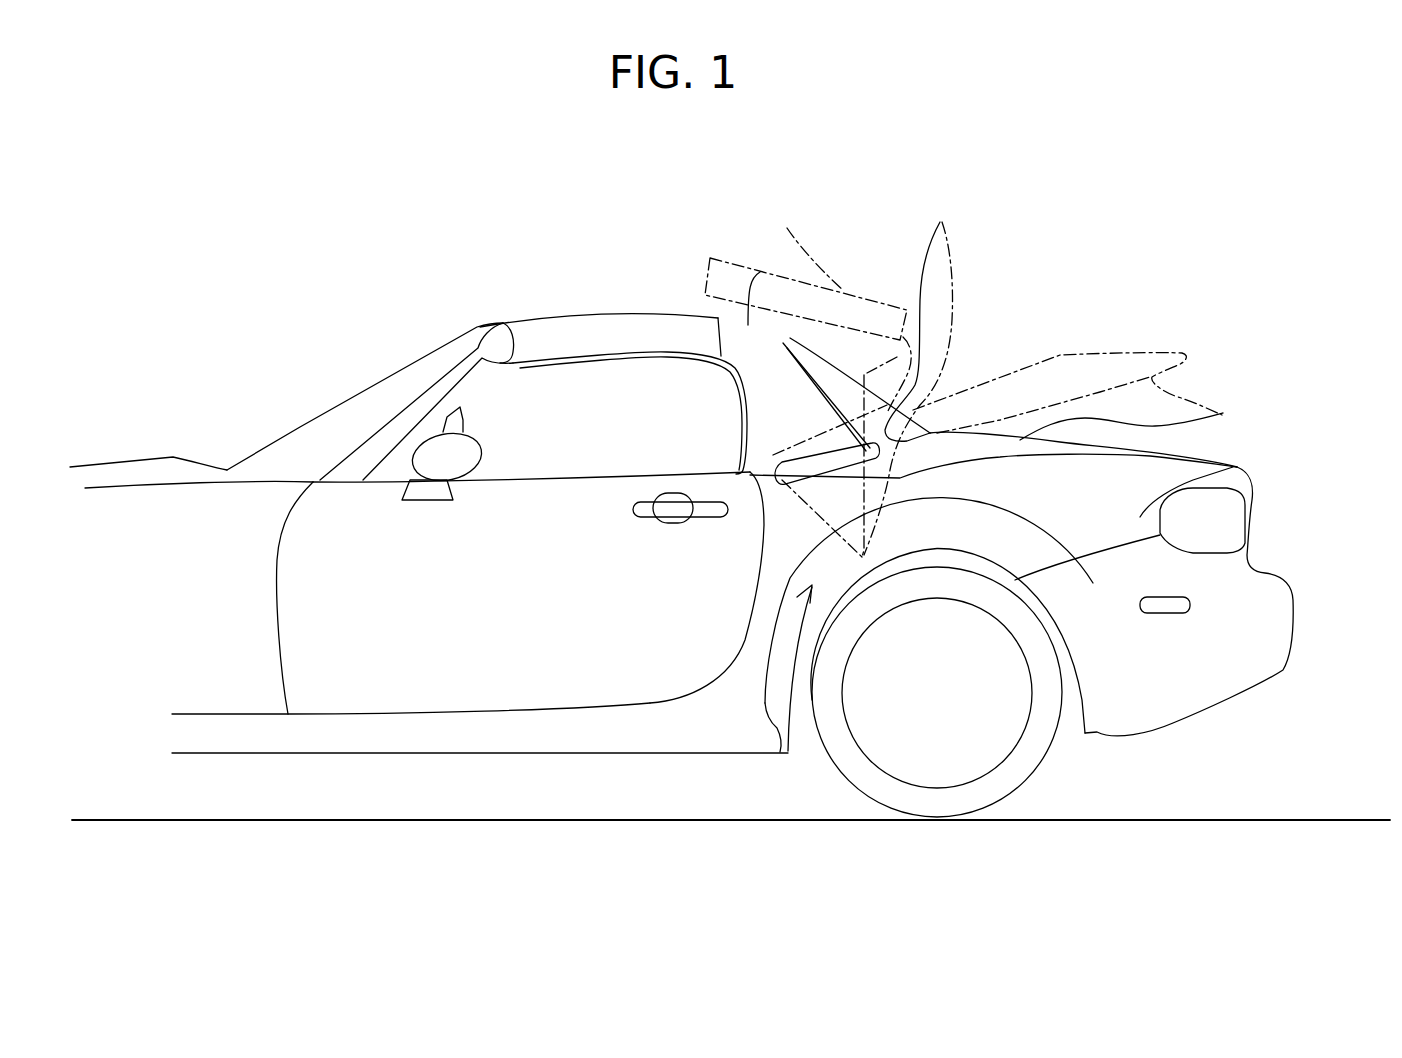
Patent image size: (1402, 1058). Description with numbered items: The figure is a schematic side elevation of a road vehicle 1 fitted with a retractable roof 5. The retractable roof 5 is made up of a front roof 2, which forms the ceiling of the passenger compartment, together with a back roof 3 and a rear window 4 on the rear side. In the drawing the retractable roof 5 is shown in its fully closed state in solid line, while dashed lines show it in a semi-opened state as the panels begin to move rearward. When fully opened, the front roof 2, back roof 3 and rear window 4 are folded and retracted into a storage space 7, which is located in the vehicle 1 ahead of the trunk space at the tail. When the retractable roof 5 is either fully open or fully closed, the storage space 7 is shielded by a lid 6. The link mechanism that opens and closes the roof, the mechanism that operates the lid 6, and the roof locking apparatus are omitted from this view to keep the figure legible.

The vehicle 1 is at (327, 293).
The front roof 2 is at (648, 313).
The back roof 3 is at (760, 272).
The rear window 4 is at (908, 369).
The retractable roof 5 is at (723, 347).
The lid 6 is at (1079, 396).
The storage space 7 is at (780, 752).